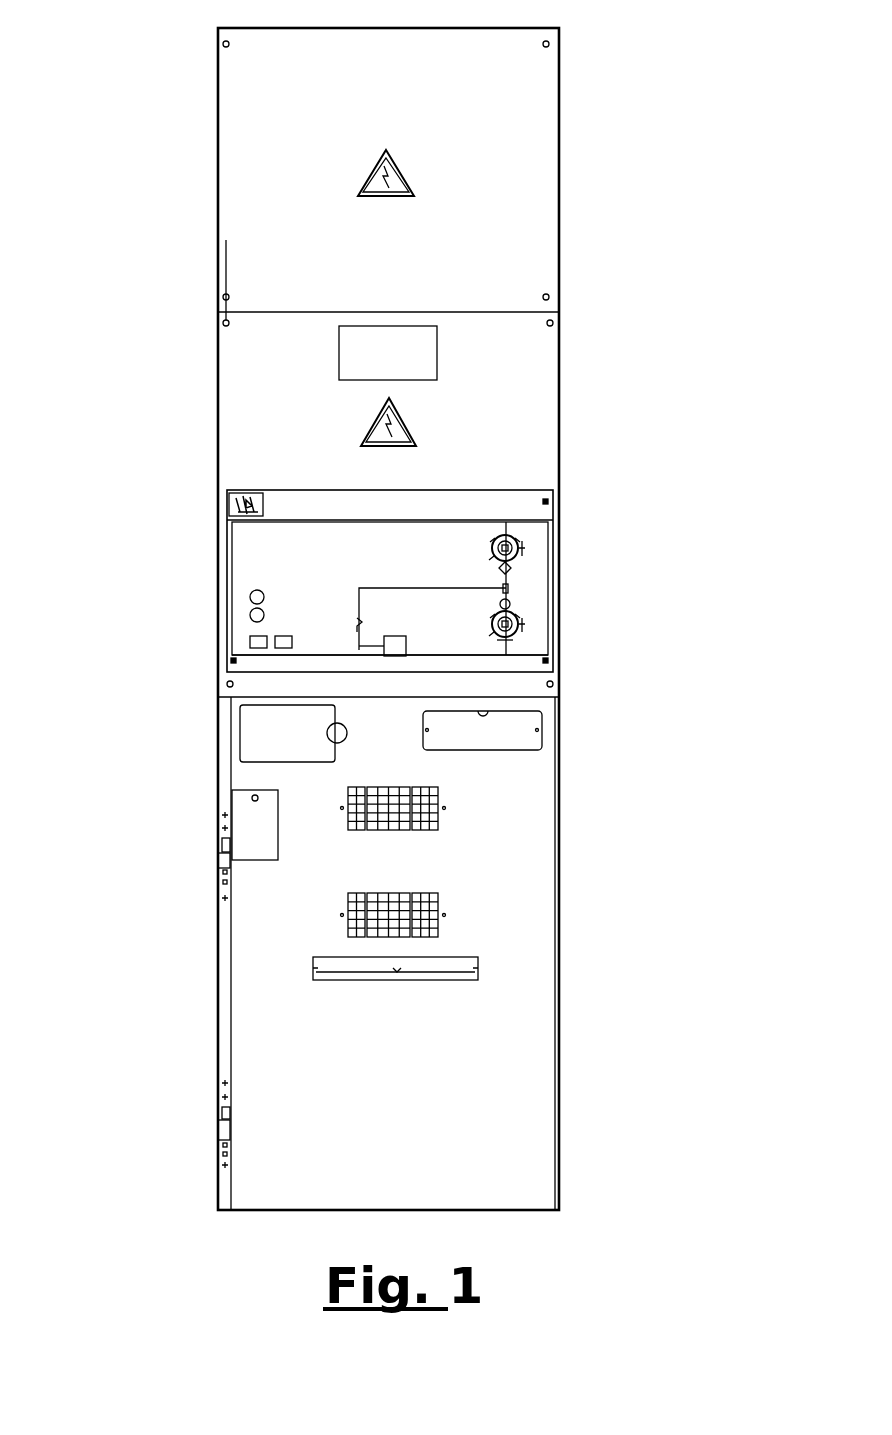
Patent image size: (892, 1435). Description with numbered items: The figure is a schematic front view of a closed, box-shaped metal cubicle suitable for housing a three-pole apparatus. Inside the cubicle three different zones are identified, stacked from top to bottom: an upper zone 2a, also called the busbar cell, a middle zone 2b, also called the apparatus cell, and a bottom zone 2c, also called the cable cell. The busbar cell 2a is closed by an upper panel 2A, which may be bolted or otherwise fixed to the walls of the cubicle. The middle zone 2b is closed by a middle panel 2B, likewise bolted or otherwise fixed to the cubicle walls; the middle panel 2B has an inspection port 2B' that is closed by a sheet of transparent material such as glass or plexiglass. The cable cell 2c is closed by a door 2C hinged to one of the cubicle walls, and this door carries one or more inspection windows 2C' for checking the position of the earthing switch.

The upper panel 2A is at (494, 130).
The middle panel 2B is at (413, 503).
The inspection port 2B' is at (299, 376).
The door 2C is at (438, 936).
The inspection windows 2C' is at (501, 860).
The upper zone 2a is at (167, 25).
The middle zone 2b is at (160, 315).
The bottom zone 2c is at (160, 705).